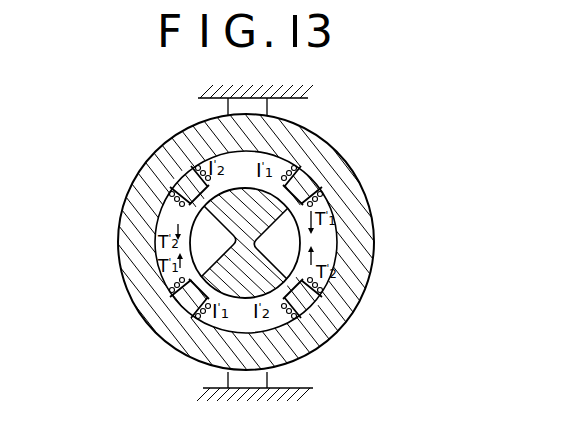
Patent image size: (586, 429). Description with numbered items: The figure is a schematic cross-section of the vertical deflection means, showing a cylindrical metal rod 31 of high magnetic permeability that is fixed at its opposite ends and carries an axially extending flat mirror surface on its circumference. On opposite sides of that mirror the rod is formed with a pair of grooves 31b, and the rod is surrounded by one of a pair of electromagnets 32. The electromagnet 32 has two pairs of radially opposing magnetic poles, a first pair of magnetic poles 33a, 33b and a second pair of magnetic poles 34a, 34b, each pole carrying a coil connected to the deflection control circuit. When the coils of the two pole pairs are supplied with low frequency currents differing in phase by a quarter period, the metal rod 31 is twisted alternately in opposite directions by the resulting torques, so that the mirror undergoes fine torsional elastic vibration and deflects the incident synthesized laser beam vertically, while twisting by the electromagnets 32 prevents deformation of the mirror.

The cylindrical metal rod 31 is at (189, 275).
The grooves 31b is at (210, 232).
The electromagnets 32 is at (338, 293).
The magnetic pole 33a is at (306, 186).
The magnetic pole 33b is at (182, 303).
The magnetic pole 34a is at (305, 294).
The magnetic pole 34b is at (177, 178).